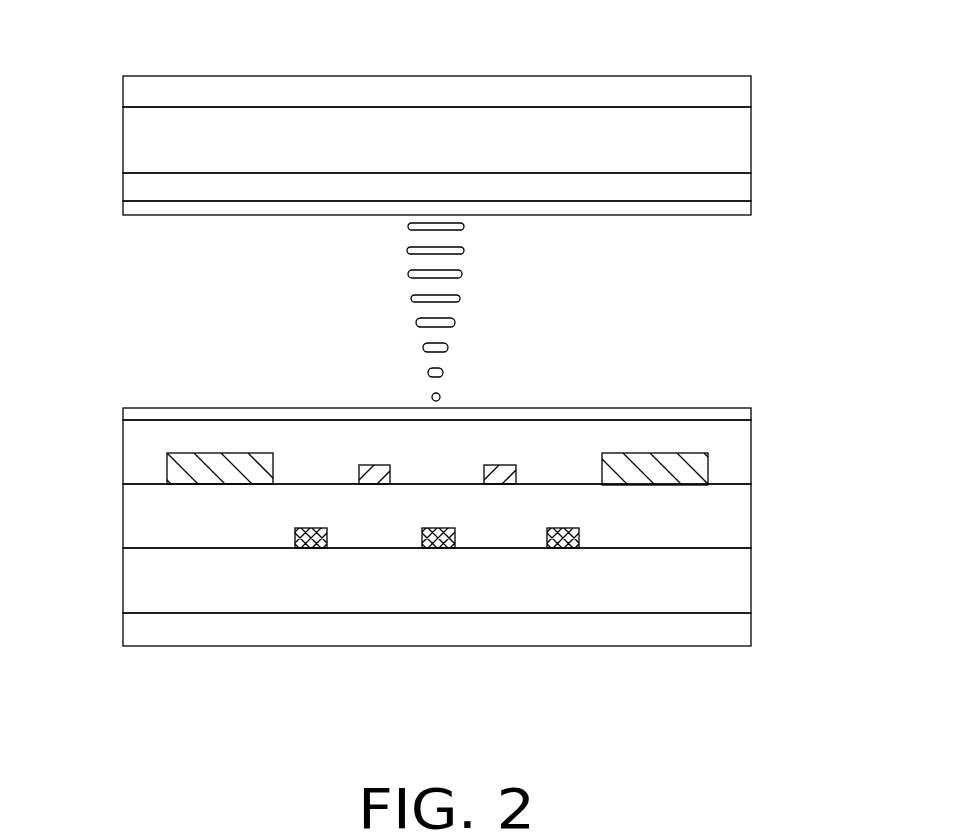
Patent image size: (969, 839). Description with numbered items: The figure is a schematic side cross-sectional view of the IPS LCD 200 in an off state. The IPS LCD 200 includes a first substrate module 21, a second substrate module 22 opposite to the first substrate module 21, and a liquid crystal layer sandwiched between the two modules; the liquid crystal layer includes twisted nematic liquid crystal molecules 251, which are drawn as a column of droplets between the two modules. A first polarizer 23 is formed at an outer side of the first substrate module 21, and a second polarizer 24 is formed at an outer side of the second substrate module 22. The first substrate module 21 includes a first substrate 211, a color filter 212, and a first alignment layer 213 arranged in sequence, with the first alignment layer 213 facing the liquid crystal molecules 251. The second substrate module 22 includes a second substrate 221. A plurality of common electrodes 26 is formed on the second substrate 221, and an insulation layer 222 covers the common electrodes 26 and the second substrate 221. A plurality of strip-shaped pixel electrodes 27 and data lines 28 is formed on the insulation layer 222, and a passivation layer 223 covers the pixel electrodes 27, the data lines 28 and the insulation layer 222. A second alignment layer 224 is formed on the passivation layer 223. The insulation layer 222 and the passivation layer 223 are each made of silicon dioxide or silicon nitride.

The IPS LCD 200 is at (437, 39).
The first substrate module 21 is at (459, 165).
The first substrate 211 is at (725, 142).
The color filter 212 is at (728, 188).
The first alignment layer 213 is at (738, 211).
The first polarizer 23 is at (733, 97).
The twisted nematic liquid crystal molecules 251 is at (449, 324).
The second substrate module 22 is at (456, 502).
The second alignment layer 224 is at (737, 416).
The passivation layer 223 is at (738, 452).
The insulation layer 222 is at (735, 515).
The second substrate 221 is at (742, 575).
The second polarizer 24 is at (735, 632).
The data lines 28 is at (221, 467).
The strip-shaped pixel electrodes 27 is at (505, 481).
The common electrodes 26 is at (440, 548).